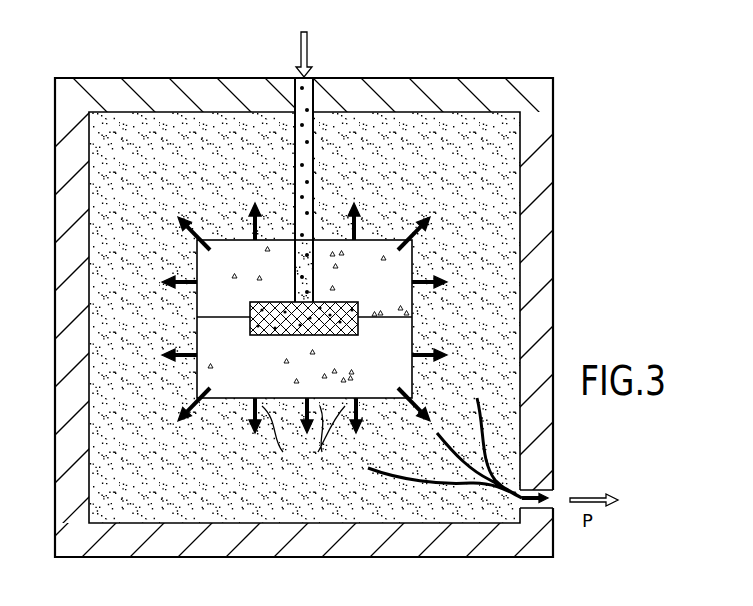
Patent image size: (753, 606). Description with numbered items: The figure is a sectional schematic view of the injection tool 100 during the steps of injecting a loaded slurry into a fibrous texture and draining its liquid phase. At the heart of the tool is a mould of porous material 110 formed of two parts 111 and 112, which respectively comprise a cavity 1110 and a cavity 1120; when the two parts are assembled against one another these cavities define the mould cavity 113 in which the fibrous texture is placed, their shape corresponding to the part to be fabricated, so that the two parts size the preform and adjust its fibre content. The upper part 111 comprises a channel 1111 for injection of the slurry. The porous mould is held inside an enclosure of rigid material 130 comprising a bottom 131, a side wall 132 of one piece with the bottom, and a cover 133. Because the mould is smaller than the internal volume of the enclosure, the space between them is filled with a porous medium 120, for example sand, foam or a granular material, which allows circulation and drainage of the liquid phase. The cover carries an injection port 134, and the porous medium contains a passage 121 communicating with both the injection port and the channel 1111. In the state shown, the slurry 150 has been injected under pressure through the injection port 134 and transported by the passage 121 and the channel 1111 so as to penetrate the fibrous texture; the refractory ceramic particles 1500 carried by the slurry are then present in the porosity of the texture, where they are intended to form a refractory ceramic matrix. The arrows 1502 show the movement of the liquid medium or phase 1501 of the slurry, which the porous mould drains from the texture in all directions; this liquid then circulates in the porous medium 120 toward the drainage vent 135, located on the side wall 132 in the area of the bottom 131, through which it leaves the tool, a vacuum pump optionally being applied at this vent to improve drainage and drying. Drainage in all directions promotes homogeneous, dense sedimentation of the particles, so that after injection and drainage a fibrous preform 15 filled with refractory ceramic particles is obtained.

The injection tool 100 is at (569, 56).
The mould of porous material 110 is at (151, 250).
The first part of porous material mould 111 is at (197, 264).
The second part of porous material mould 112 is at (197, 373).
The mould cavity 113 is at (342, 337).
The porous medium 120 is at (427, 143).
The passage 121 is at (316, 175).
The enclosure of rigid material 130 is at (563, 148).
The bottom 131 is at (157, 543).
The side wall 132 is at (540, 270).
The cover 133 is at (509, 92).
The injection port 134 is at (315, 103).
The drainage vent 135 is at (553, 490).
The slurry 150 is at (301, 50).
The fibrous preform 15 is at (352, 337).
The cavity of first mould part 1110 is at (267, 307).
The channel 1111 is at (313, 262).
The cavity of second mould part 1120 is at (265, 336).
The refractory ceramic particles 1500 is at (308, 165).
The liquid medium or phase 1501 is at (300, 151).
The arrows 1502 is at (303, 438).